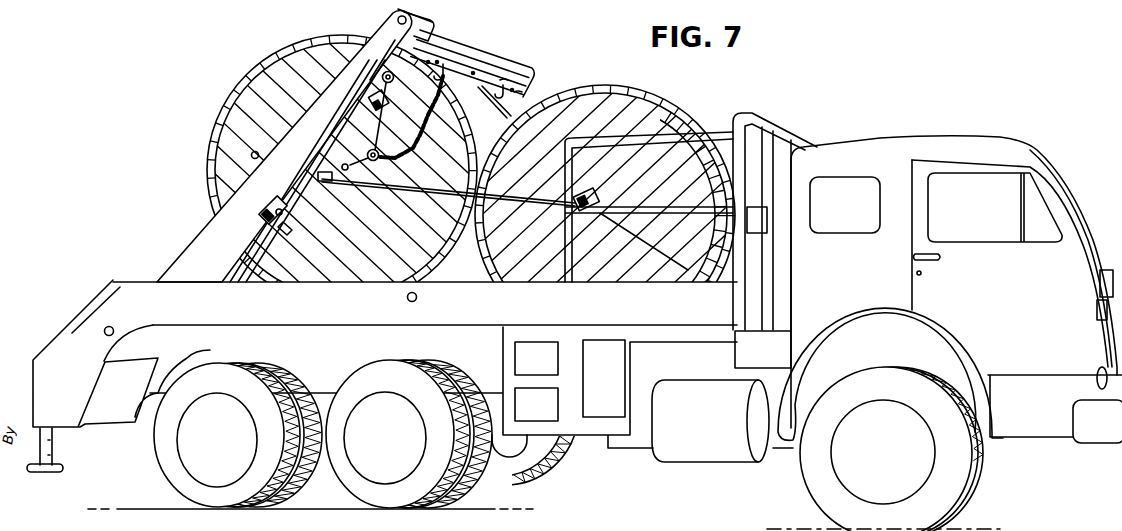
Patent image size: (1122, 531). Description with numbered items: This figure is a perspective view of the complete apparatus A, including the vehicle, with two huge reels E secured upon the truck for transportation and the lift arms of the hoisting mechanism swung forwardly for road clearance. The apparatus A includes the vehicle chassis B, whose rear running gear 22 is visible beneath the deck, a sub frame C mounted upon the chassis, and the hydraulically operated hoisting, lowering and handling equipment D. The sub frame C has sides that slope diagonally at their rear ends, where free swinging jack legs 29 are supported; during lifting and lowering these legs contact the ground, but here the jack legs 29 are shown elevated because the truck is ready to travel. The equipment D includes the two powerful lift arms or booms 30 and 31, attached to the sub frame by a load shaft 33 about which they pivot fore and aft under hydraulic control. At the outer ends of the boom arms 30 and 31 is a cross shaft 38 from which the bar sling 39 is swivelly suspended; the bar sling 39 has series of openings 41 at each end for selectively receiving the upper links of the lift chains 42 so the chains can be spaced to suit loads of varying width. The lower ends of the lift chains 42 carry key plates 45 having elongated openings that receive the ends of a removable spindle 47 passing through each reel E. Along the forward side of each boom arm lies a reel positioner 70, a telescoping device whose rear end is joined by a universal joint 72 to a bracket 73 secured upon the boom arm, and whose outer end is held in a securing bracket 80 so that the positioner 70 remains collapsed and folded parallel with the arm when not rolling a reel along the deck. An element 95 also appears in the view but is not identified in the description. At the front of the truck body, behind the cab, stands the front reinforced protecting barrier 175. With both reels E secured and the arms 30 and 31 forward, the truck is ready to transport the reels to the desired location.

The apparatus A is at (900, 103).
The vehicle chassis B is at (187, 358).
The sub frame C is at (162, 295).
The hydraulically operated hoisting, lowering and handling equipment D is at (377, 33).
The reel E is at (233, 120).
The rear running gear 22 is at (182, 478).
The free swinging jack legs 29 is at (58, 457).
The lift arm or boom 30 is at (547, 63).
The lift arm or boom 31 is at (420, 18).
The load shaft 33 is at (105, 335).
The cross shaft 38 is at (462, 42).
The bar sling 39 is at (495, 50).
The openings 41 is at (373, 116).
The lift chains 42 is at (413, 119).
The key plates 45 is at (318, 190).
The spindle 47 is at (597, 192).
The reel positioners 70 is at (342, 136).
The universal joint 72 is at (287, 228).
The bracket 73 is at (258, 213).
The securing bracket 80 is at (361, 73).
The cable 95 is at (478, 192).
The front reinforced protecting barrier 175 is at (773, 100).